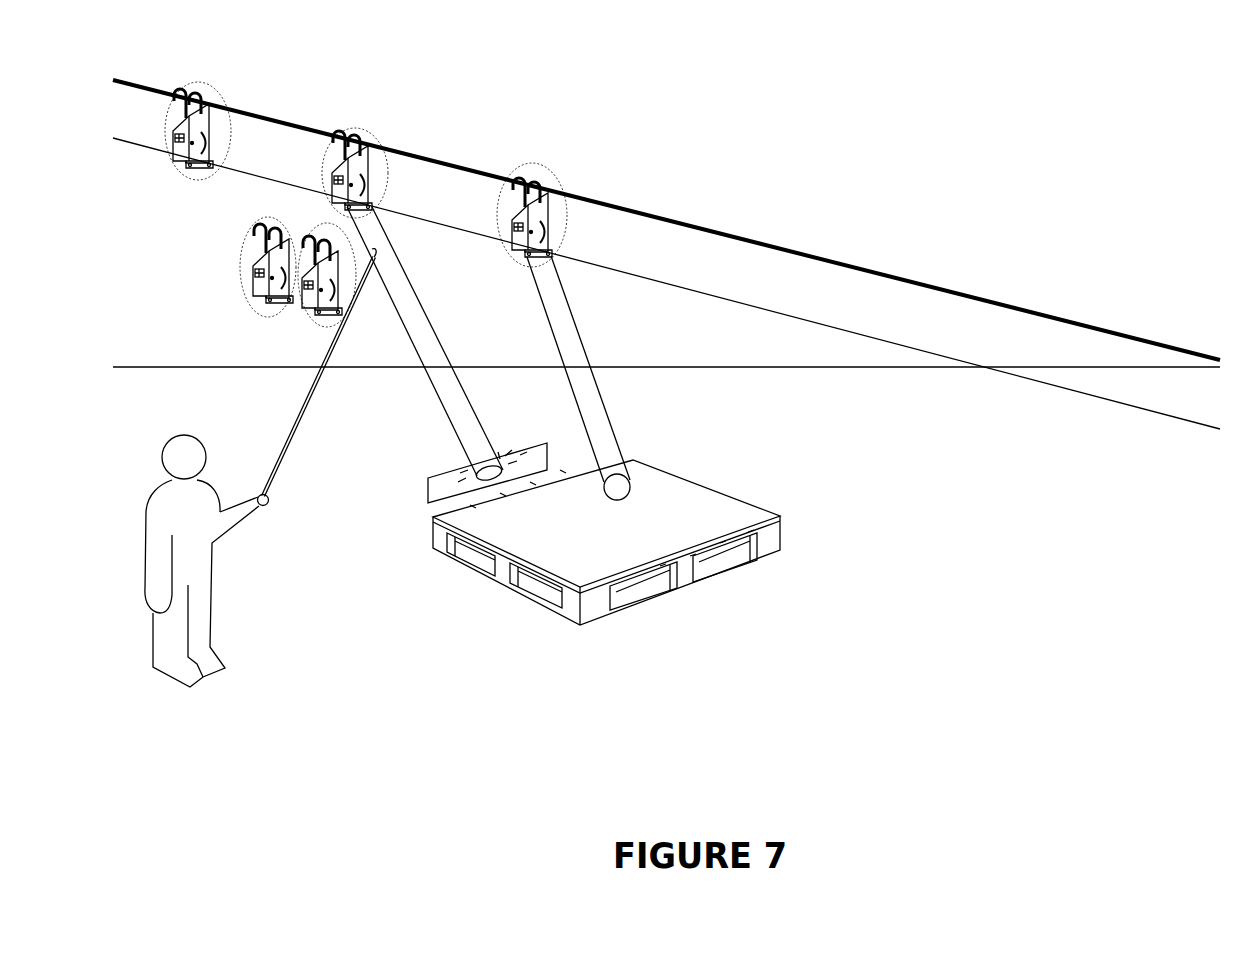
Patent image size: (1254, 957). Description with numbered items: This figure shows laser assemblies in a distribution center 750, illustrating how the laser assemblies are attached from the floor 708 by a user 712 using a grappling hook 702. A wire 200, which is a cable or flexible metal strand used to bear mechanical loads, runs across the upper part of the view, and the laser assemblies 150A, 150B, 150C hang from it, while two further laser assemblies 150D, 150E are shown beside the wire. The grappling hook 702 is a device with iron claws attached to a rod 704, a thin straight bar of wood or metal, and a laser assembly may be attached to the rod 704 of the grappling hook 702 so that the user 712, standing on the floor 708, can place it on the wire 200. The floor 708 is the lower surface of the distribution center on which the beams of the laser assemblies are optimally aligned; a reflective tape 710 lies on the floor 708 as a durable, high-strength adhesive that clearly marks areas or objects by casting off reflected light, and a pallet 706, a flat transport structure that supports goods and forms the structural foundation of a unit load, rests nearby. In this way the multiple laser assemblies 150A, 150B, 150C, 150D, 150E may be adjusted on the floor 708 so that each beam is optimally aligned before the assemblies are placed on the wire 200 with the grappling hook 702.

The laser assembly 150A is at (222, 95).
The laser assembly 150B is at (380, 134).
The laser assembly 150C is at (560, 182).
The laser assembly 150D is at (250, 228).
The laser assembly 150E is at (312, 322).
The wire 200 is at (890, 275).
The grappling hook 702 is at (308, 394).
The rod 704 is at (375, 257).
The pallet 706 is at (635, 603).
The floor 708 is at (908, 593).
The reflective tape 710 is at (428, 497).
The user 712 is at (222, 675).
The laser assemblies in a distribution center 750 is at (284, 772).